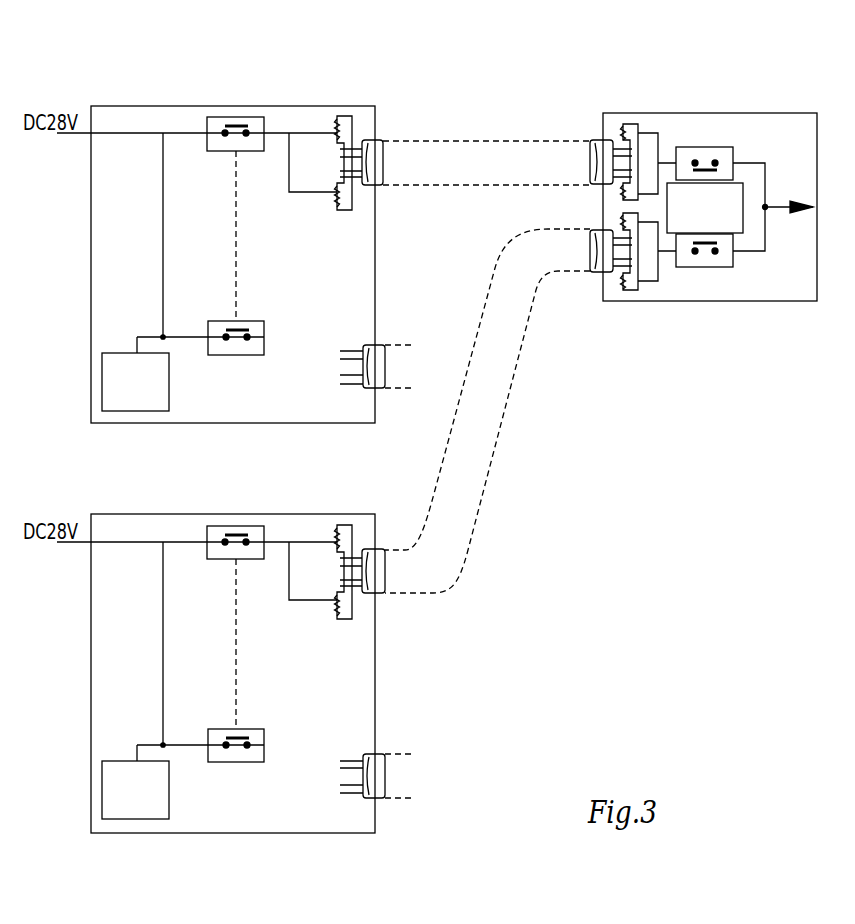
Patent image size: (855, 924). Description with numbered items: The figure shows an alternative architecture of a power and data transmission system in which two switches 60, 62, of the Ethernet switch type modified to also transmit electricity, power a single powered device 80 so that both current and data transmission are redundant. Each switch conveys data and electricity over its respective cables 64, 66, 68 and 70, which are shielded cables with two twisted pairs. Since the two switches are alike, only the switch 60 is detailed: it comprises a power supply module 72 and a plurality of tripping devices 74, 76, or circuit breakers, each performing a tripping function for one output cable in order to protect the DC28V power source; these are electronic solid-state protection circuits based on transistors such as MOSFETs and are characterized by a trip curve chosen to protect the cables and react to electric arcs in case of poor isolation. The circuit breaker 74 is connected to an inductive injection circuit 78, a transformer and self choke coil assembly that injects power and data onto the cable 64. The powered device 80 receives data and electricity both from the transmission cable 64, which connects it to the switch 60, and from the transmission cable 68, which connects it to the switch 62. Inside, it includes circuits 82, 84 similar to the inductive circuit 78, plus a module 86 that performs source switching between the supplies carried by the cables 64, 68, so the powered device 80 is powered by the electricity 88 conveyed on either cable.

The switch 60 is at (238, 108).
The switch 62 is at (253, 833).
The cable 64 is at (449, 141).
The cable 66 is at (398, 345).
The cable 68 is at (401, 560).
The cable 70 is at (396, 753).
The power supply module 72 is at (102, 393).
The tripping device 74 is at (203, 114).
The tripping device 76 is at (237, 367).
The inductive injection circuit 78 is at (342, 108).
The powered device 80 is at (693, 113).
The circuit 82 is at (630, 124).
The circuit 84 is at (630, 292).
The module 86 is at (725, 220).
The electricity 88 is at (778, 207).